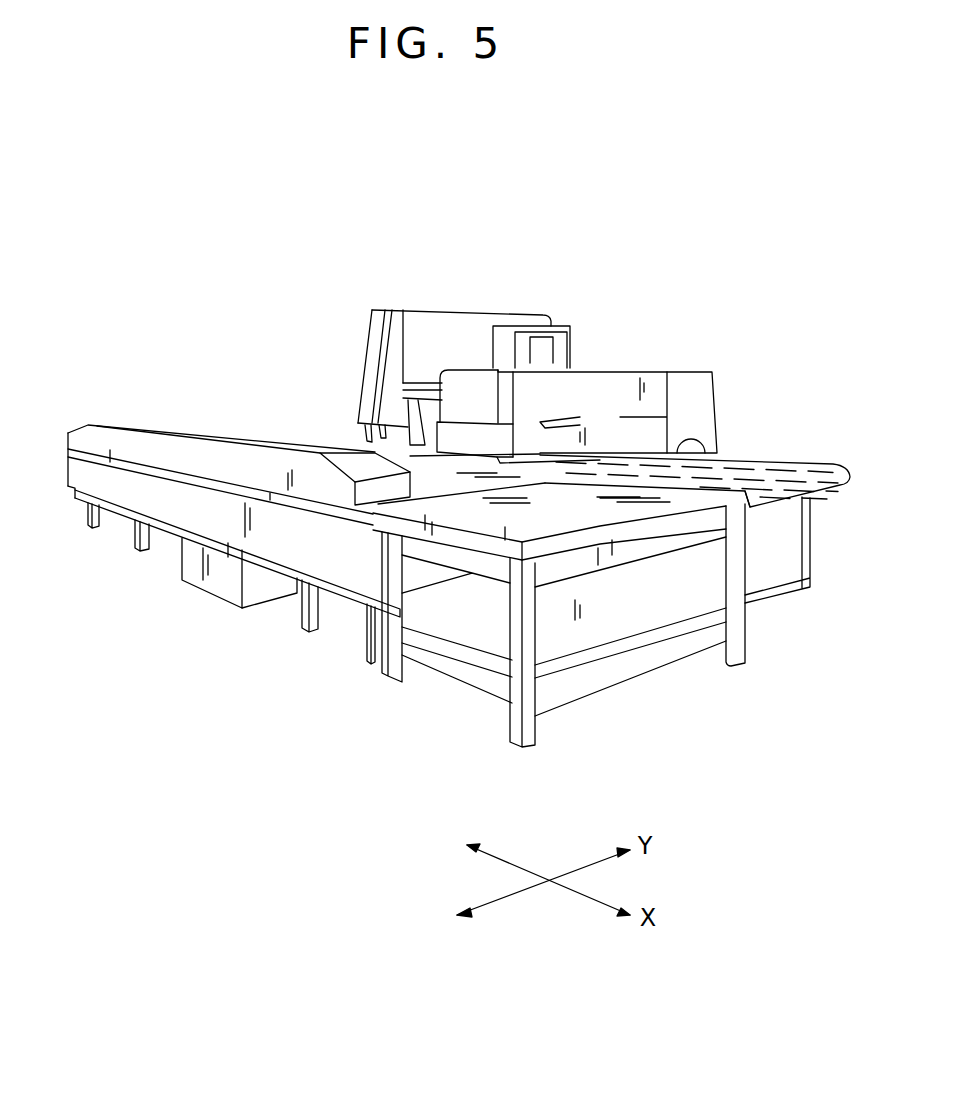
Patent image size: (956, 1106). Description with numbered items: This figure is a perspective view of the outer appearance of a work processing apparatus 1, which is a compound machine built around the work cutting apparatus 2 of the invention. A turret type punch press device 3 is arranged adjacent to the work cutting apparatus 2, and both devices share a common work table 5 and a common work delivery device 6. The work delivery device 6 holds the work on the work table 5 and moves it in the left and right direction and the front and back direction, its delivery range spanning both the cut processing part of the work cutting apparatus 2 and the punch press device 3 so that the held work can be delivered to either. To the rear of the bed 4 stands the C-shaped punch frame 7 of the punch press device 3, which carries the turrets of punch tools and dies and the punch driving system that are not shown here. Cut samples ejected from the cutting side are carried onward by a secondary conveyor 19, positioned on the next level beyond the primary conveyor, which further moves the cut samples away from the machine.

The work processing apparatus 1 is at (228, 300).
The work cutting apparatus 2 is at (641, 360).
The turret type punch press device 3 is at (467, 297).
The bed 4 is at (225, 587).
The work table 5 is at (440, 474).
The work delivery device 6 is at (192, 430).
The C-shaped punch frame 7 is at (425, 323).
The secondary conveyor 19 is at (777, 470).